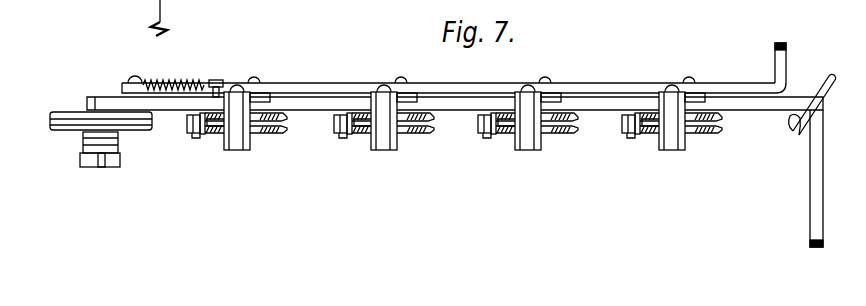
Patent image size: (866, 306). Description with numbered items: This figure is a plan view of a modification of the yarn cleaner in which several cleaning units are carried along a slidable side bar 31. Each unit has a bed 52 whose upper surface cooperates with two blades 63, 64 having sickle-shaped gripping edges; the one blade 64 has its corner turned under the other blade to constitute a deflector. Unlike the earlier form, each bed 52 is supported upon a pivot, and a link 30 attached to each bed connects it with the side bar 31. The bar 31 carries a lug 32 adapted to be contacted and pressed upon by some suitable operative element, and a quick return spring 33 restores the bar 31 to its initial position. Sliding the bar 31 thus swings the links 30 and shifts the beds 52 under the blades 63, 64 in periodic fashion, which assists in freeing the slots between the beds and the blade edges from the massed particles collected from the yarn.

The link 30 is at (411, 95).
The slidable side bar 31 is at (312, 89).
The lug 32 is at (784, 58).
The quick return spring 33 is at (171, 84).
The bed 52 is at (234, 149).
The blade 63 is at (289, 131).
The blade 64 is at (288, 116).